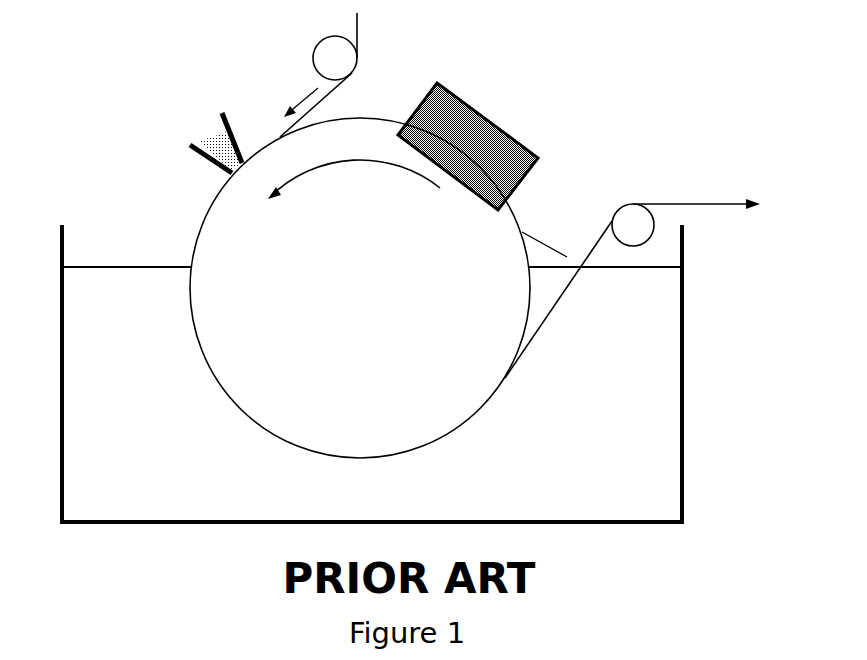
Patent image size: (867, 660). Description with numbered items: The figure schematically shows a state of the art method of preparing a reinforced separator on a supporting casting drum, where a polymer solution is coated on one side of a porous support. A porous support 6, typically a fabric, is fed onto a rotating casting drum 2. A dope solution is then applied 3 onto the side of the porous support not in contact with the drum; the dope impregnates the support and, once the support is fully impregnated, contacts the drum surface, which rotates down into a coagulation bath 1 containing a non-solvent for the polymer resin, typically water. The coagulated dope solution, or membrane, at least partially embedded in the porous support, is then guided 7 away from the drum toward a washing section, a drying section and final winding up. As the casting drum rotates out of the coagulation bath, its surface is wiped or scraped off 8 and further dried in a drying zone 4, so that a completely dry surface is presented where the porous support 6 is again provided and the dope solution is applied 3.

The coagulation bath 1 is at (372, 373).
The casting drum 2 is at (360, 288).
The dope solution application 3 is at (213, 134).
The drying zone 4 is at (468, 146).
The porous support 6 is at (334, 72).
The guiding of the coagulated membrane 7 is at (632, 266).
The wiping or scraping of drum surface 8 is at (550, 213).